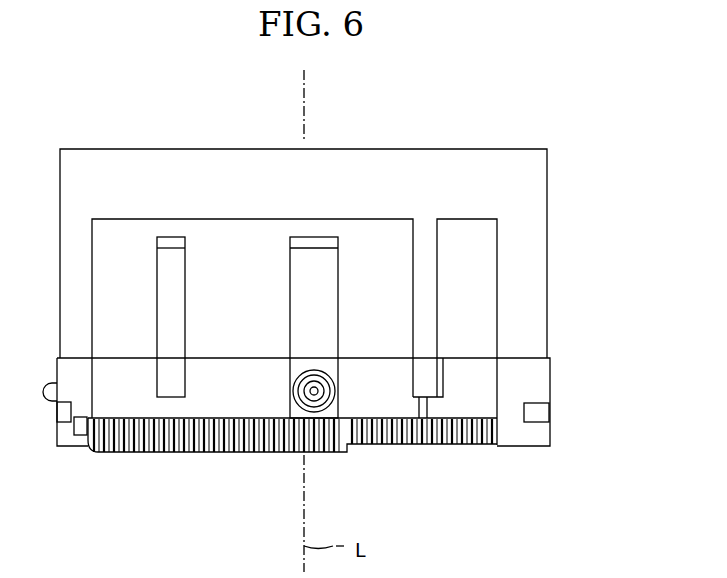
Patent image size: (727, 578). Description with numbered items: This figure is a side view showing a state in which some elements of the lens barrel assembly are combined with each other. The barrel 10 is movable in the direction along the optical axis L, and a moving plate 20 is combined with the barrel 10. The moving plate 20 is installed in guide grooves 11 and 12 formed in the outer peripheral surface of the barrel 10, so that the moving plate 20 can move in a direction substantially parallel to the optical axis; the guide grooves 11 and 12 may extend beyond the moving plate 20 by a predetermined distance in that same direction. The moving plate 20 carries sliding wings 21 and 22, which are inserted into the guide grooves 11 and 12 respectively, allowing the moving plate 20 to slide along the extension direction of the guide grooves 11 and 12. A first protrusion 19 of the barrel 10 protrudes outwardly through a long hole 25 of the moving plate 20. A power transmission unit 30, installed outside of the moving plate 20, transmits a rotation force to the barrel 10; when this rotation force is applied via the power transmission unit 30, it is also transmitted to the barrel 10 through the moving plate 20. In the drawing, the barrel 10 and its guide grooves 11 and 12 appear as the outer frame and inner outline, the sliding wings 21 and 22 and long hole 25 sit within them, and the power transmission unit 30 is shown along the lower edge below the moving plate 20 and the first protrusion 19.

The barrel 10 is at (537, 205).
The guide groove 11 is at (270, 219).
The guide groove 12 is at (462, 219).
The first protrusion 19 is at (316, 397).
The moving plate 20 is at (155, 474).
The sliding wing 21 is at (233, 235).
The sliding wing 22 is at (476, 237).
The long hole 25 is at (317, 244).
The power transmission unit 30 is at (210, 453).